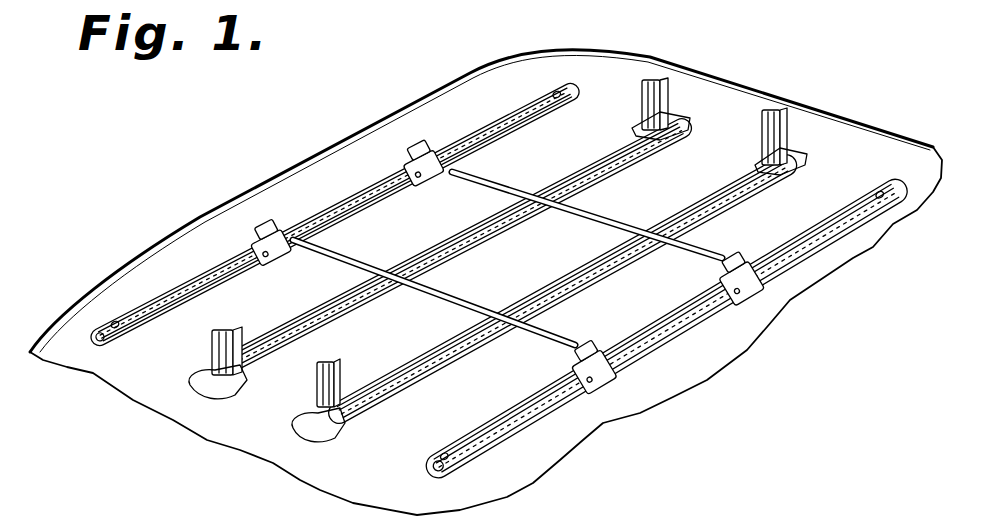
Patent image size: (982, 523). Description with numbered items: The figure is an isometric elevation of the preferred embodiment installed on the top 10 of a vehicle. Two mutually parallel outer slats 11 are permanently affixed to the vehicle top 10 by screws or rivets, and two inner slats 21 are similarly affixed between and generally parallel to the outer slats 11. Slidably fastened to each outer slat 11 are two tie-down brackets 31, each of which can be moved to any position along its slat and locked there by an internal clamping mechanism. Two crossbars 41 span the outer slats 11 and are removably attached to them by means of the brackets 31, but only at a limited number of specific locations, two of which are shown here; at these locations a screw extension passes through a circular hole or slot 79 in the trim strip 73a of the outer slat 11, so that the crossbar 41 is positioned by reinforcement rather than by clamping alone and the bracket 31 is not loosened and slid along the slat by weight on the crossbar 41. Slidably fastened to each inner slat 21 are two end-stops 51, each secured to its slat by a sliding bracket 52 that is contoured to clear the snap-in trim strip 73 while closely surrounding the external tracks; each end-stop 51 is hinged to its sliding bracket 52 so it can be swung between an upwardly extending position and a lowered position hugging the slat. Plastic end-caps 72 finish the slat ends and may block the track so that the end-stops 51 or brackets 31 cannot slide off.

The vehicle top 10 is at (308, 168).
The outer slat 11 is at (143, 310).
The inner slat 21 is at (349, 320).
The tie-down bracket 31 is at (247, 250).
The crossbar 41 is at (457, 296).
The end-stop 51 is at (243, 340).
The sliding bracket 52 is at (210, 372).
The end-cap 72 is at (85, 352).
The trim strip 73 is at (680, 206).
The trim strip 73a is at (360, 206).
The circular hole or slot 79 is at (117, 327).